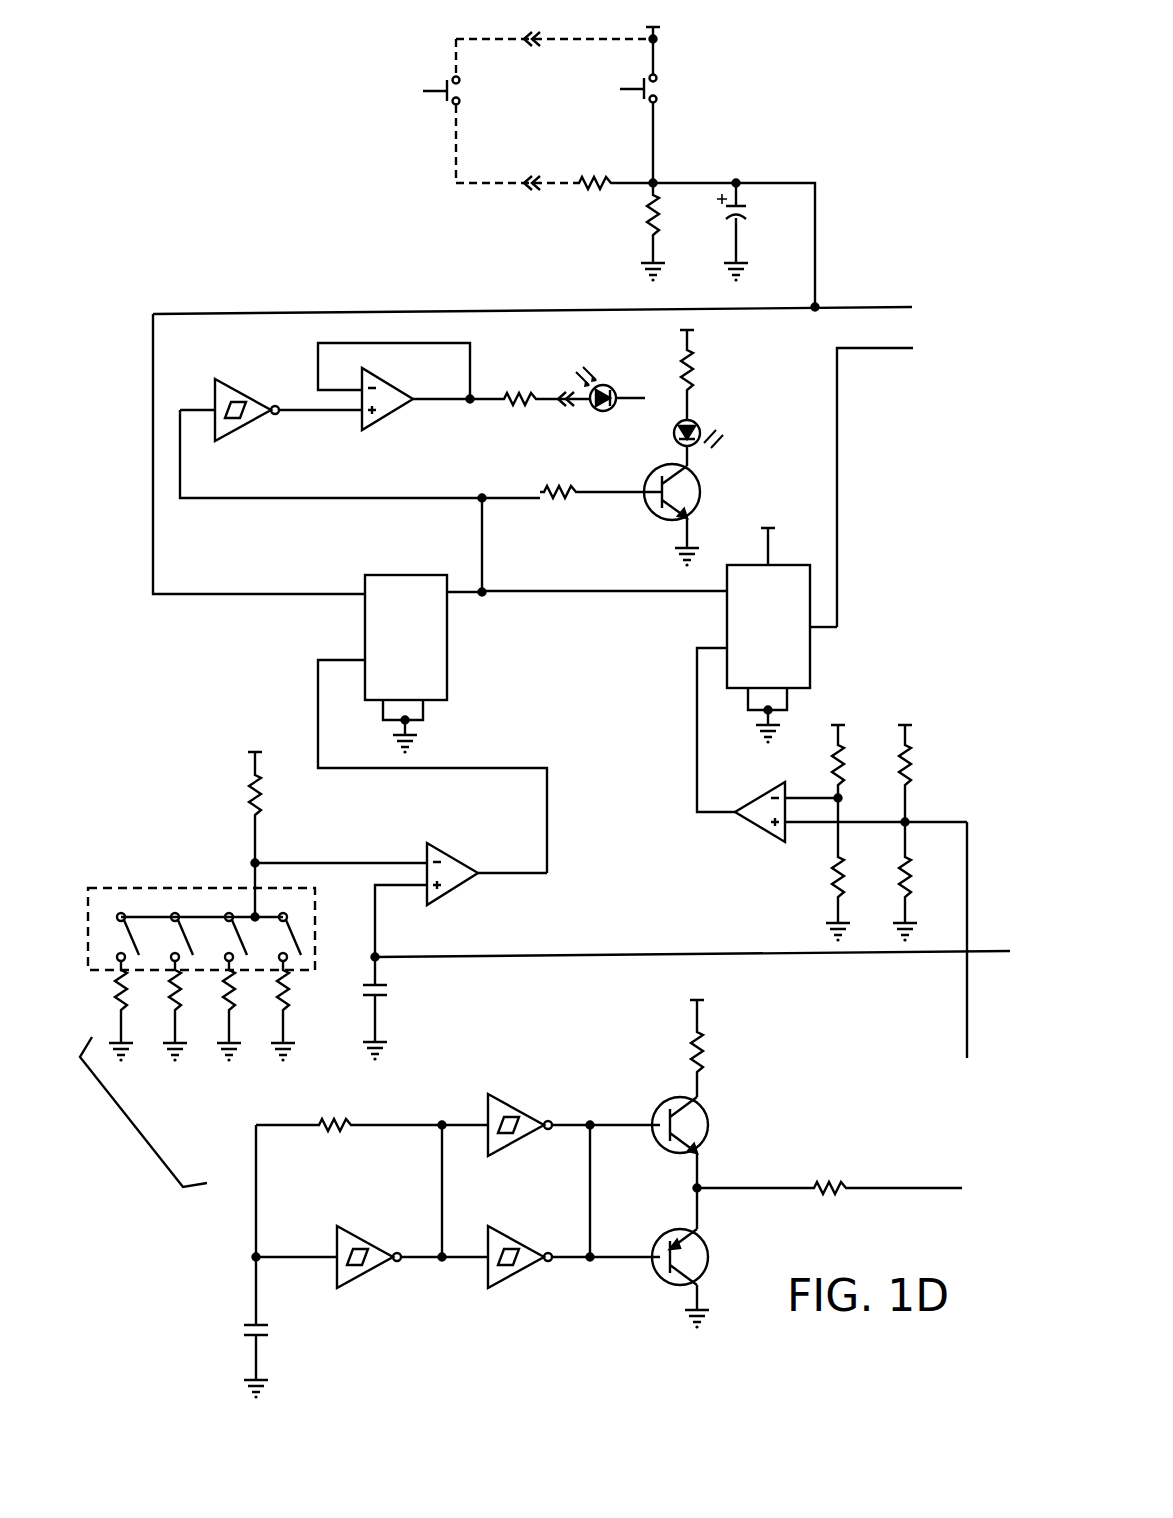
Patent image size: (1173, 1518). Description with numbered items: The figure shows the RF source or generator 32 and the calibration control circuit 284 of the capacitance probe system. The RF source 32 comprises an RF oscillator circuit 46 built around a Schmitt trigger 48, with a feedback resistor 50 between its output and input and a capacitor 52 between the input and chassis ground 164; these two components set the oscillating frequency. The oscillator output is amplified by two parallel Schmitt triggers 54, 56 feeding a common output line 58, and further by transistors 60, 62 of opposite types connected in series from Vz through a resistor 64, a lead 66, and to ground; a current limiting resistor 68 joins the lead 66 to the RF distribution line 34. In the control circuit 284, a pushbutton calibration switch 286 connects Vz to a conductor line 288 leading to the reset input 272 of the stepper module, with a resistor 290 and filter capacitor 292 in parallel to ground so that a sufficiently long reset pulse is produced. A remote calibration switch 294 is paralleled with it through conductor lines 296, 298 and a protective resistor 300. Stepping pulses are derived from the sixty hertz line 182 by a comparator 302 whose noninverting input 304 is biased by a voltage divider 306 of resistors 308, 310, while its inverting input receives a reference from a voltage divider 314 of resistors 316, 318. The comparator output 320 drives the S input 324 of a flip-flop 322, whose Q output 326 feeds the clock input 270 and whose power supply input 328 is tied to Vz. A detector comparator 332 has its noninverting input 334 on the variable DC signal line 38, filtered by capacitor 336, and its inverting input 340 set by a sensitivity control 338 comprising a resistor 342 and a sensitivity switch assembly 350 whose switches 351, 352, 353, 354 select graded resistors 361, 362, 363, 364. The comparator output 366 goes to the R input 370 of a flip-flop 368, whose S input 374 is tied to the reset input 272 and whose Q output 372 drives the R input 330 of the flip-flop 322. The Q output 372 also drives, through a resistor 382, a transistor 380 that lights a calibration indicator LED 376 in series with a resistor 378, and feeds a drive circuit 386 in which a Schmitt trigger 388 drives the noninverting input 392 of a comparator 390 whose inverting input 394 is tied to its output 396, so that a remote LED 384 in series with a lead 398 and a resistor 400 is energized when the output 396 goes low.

The control circuit 284 is at (300, 133).
The pushbutton calibration switch 286 is at (633, 82).
The conductor line 288 is at (690, 183).
The resistor 290 is at (648, 236).
The filter capacitor 292 is at (745, 213).
The remote calibration switch 294 is at (440, 82).
The remotely extending conductor line 296 is at (487, 38).
The remotely extending conductor line 298 is at (497, 186).
The protective resistor 300 is at (580, 189).
The chassis ground 164 is at (738, 272).
The clock input 270 is at (870, 348).
The reset input 272 is at (900, 310).
The S input 374 is at (279, 594).
The drive circuit 386 is at (213, 380).
The Schmitt trigger 388 is at (262, 392).
The noninverting input 392 is at (320, 413).
The comparator 390 is at (385, 431).
The inverting input 394 is at (333, 386).
The comparator output 396 is at (420, 403).
The resistor 400 is at (522, 396).
The LED 384 is at (612, 413).
The lead 398 is at (570, 370).
The resistor 378 is at (692, 366).
The LED 376 is at (700, 423).
The transistor 380 is at (701, 510).
The resistor 382 is at (545, 493).
The flip-flop 368 is at (408, 620).
The Q output 372 is at (478, 594).
The R input 330 is at (565, 591).
The R input 370 is at (318, 660).
The flip-flop 322 is at (767, 608).
The power supply input 328 is at (767, 556).
The Q output 326 is at (852, 628).
The S input 324 is at (695, 650).
The comparator 302 is at (765, 838).
The output 320 is at (720, 812).
The resistor 316 is at (840, 798).
The noninverting input 304 is at (828, 824).
The voltage divider 314 is at (878, 762).
The voltage divider 306 is at (918, 772).
The first resistor 308 is at (910, 790).
The resistor 318 is at (842, 880).
The second resistor 310 is at (908, 880).
The variable DC signal line 38 is at (975, 951).
The 60 hertz line 182 is at (967, 1046).
The comparator 332 is at (452, 848).
The comparator output 366 is at (508, 876).
The noninverting input 334 is at (383, 895).
The inverting input 340 is at (290, 863).
The resistor 342 is at (250, 805).
The filter capacitor 336 is at (388, 990).
The sensitivity control 338 is at (240, 880).
The sensitivity switch assembly 350 is at (318, 936).
The switch 351 is at (131, 938).
The switch 352 is at (185, 938).
The switch 353 is at (240, 938).
The switch 354 is at (298, 925).
The resistor 361 is at (132, 1000).
The resistor 362 is at (186, 1000).
The resistor 363 is at (240, 1000).
The resistor 364 is at (294, 1000).
The RF source or generator 32 is at (255, 1115).
The feedback resistor 50 is at (335, 1135).
The Schmitt trigger 48 is at (345, 1240).
The RF oscillator circuit 46 is at (373, 1292).
The capacitor 52 is at (243, 1333).
The Schmitt trigger 54 is at (510, 1150).
The Schmitt trigger 56 is at (505, 1290).
The common output line 58 is at (594, 1180).
The transistor 60 is at (668, 1100).
The resistor 64 is at (690, 1050).
The transistor 62 is at (661, 1285).
The lead 66 is at (700, 1188).
The current limiting resistor 68 is at (828, 1197).
The RF distribution line 34 is at (885, 1188).